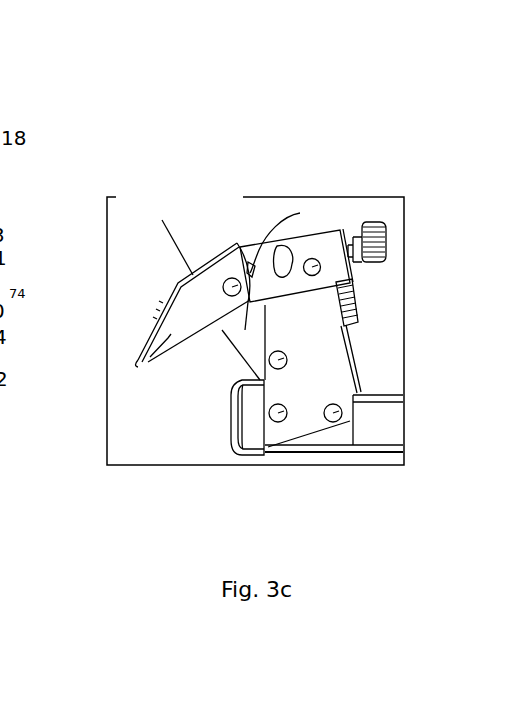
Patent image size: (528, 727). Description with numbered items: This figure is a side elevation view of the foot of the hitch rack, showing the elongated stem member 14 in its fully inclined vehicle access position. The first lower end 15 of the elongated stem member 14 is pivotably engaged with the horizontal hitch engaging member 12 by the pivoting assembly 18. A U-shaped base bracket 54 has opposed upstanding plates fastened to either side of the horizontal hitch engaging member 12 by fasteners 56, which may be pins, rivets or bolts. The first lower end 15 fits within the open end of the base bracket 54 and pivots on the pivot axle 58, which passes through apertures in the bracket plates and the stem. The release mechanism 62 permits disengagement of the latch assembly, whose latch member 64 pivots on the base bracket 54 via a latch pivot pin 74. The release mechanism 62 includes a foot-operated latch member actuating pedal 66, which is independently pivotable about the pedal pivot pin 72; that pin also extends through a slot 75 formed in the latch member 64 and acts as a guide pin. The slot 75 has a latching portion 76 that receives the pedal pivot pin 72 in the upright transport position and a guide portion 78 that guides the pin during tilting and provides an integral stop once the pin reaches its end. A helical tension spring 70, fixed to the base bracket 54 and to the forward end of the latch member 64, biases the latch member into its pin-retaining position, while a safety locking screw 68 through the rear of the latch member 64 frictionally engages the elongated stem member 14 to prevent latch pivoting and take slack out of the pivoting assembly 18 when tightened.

The horizontal hitch engaging member 12 is at (382, 421).
The elongated stem member 14 is at (181, 228).
The first lower end 15 is at (252, 341).
The pivoting assembly 18 is at (404, 167).
The U-shaped base bracket 54 is at (330, 378).
The fasteners 56 is at (290, 419).
The pivot axle 58 is at (236, 383).
The release mechanism 62 is at (250, 232).
The latch member 64 is at (340, 230).
The latch member actuating pedal 66 is at (152, 360).
The safety locking screw 68 is at (385, 233).
The helical tension spring 70 is at (357, 302).
The pedal pivot pin 72 is at (228, 296).
The latch pivot pin 74 is at (318, 267).
The slot 75 is at (278, 237).
The latching portion 76 is at (284, 278).
The guide portion 78 is at (300, 213).